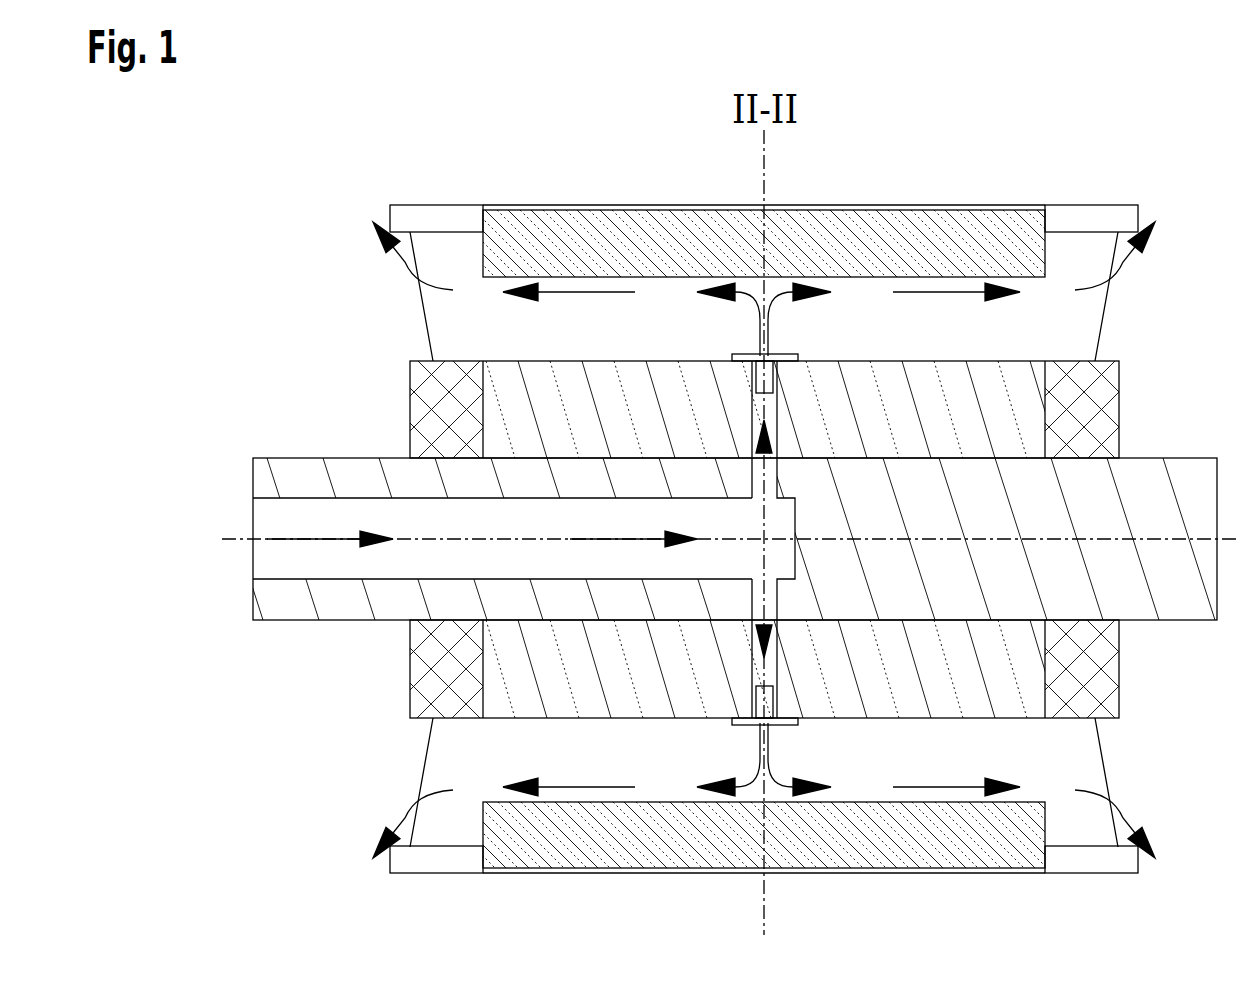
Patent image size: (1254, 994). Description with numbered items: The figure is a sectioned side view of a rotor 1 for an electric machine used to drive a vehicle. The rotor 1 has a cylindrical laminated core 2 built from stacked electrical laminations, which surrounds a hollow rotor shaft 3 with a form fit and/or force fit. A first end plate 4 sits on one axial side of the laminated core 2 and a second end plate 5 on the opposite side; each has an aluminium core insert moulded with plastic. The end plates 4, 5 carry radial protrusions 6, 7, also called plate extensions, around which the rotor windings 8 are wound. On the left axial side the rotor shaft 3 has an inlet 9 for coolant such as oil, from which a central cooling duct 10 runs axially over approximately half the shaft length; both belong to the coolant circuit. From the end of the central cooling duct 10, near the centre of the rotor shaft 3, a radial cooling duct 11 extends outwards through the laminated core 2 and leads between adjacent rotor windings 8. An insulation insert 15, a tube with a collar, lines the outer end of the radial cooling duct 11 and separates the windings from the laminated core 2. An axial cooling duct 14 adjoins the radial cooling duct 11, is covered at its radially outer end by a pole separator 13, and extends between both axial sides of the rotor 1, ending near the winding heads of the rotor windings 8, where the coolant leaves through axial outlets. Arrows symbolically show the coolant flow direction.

The rotor 1 is at (323, 892).
The laminated core 2 is at (555, 682).
The rotor shaft 3 is at (270, 603).
The first end plate 4 is at (440, 420).
The second end plate 5 is at (1080, 423).
The radial protrusion 6 is at (440, 207).
The radial protrusion 7 is at (1090, 208).
The rotor winding 8 is at (975, 343).
The inlet 9 is at (253, 559).
The central cooling duct 10 is at (402, 522).
The radial cooling duct 11 is at (757, 418).
The pole separator 13 is at (890, 208).
The axial cooling duct 14 is at (662, 287).
The insulation insert 15 is at (776, 375).